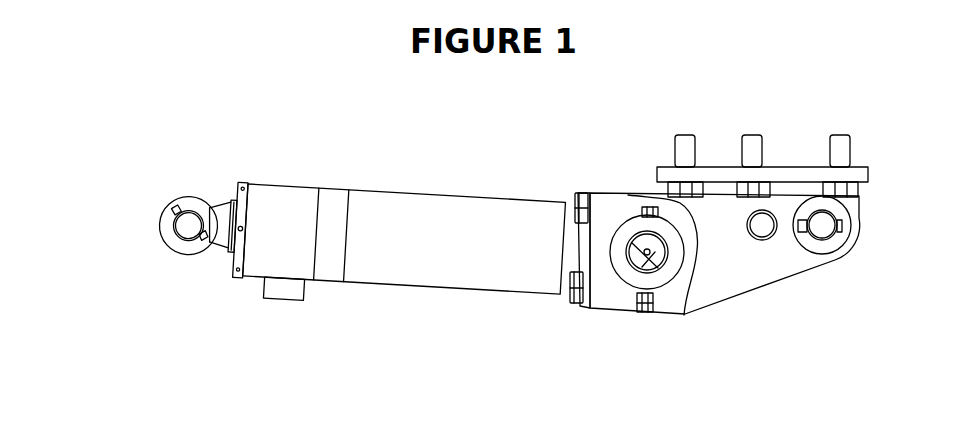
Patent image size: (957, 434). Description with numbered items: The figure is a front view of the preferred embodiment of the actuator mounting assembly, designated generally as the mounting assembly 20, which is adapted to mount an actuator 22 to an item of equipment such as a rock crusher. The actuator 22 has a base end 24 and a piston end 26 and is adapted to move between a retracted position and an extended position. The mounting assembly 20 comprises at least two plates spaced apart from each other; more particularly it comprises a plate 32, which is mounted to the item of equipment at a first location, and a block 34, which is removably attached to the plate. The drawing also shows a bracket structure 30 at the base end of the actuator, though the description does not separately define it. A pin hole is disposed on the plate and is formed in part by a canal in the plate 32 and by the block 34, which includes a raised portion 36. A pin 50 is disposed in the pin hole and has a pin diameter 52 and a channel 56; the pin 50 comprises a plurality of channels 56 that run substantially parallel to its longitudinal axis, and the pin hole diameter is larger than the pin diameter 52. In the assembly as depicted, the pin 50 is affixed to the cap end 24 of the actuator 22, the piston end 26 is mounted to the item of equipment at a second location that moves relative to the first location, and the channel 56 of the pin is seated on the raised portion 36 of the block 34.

The mounting assembly 20 is at (543, 193).
The actuator 22 is at (408, 192).
The base end 24 is at (563, 306).
The piston end 26 is at (233, 178).
The mounting bracket 30 is at (829, 267).
The plate 32 is at (733, 277).
The block 34 is at (607, 300).
The raised portion 36 is at (628, 250).
The pin 50 is at (642, 233).
The pin diameter 52 is at (655, 268).
The channel 56 is at (654, 262).